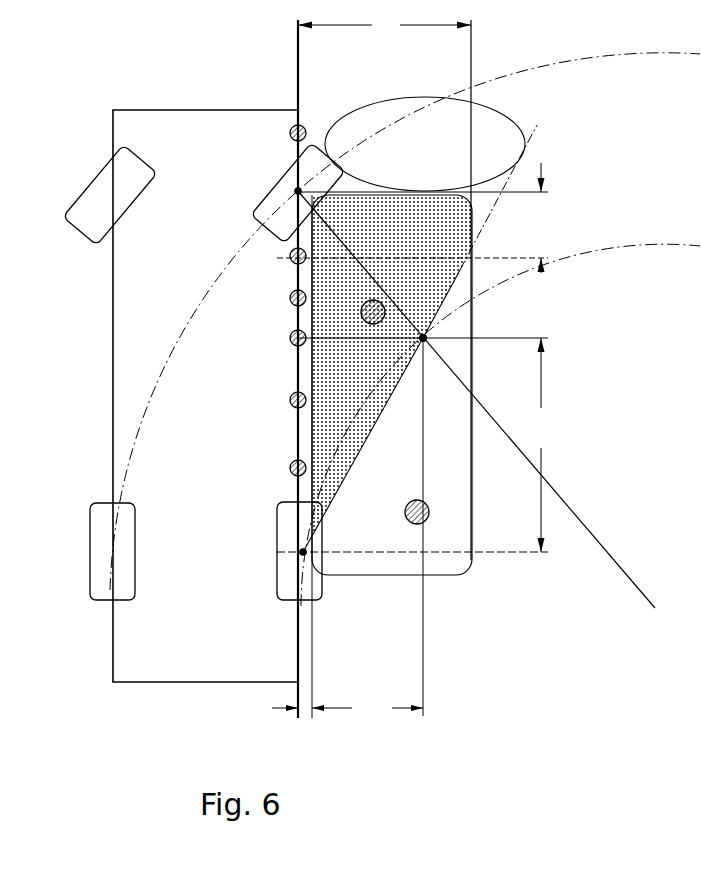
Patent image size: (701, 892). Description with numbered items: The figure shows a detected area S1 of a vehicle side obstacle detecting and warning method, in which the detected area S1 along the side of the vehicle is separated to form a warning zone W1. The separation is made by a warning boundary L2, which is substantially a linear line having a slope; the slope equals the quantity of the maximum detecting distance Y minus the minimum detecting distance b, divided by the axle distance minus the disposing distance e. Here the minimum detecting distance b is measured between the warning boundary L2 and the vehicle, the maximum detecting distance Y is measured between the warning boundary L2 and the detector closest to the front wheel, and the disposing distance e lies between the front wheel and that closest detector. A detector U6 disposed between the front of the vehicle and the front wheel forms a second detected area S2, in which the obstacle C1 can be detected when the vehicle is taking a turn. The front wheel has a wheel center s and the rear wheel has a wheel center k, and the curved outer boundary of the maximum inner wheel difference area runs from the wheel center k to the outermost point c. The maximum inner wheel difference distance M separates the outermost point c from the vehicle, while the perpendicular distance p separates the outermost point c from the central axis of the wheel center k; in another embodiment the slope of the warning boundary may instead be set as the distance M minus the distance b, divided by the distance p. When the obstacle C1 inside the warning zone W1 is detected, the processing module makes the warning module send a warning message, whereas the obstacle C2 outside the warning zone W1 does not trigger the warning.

The second detected area S2 is at (347, 112).
The detector U6 is at (291, 128).
The obstacle C1 is at (375, 300).
The obstacle C2 is at (429, 510).
The maximum detecting distance Y is at (384, 26).
The warning boundary L2 is at (527, 148).
The disposing distance e is at (540, 218).
The warning zone W1 is at (432, 300).
The detected area S1 is at (474, 325).
The outermost point c is at (422, 326).
The perpendicular distance p is at (541, 445).
The wheel center of the rear wheel k is at (299, 551).
The wheel center of the front wheel s is at (298, 193).
The minimum detecting distance b is at (269, 709).
The maximum inner wheel difference distance M is at (367, 708).